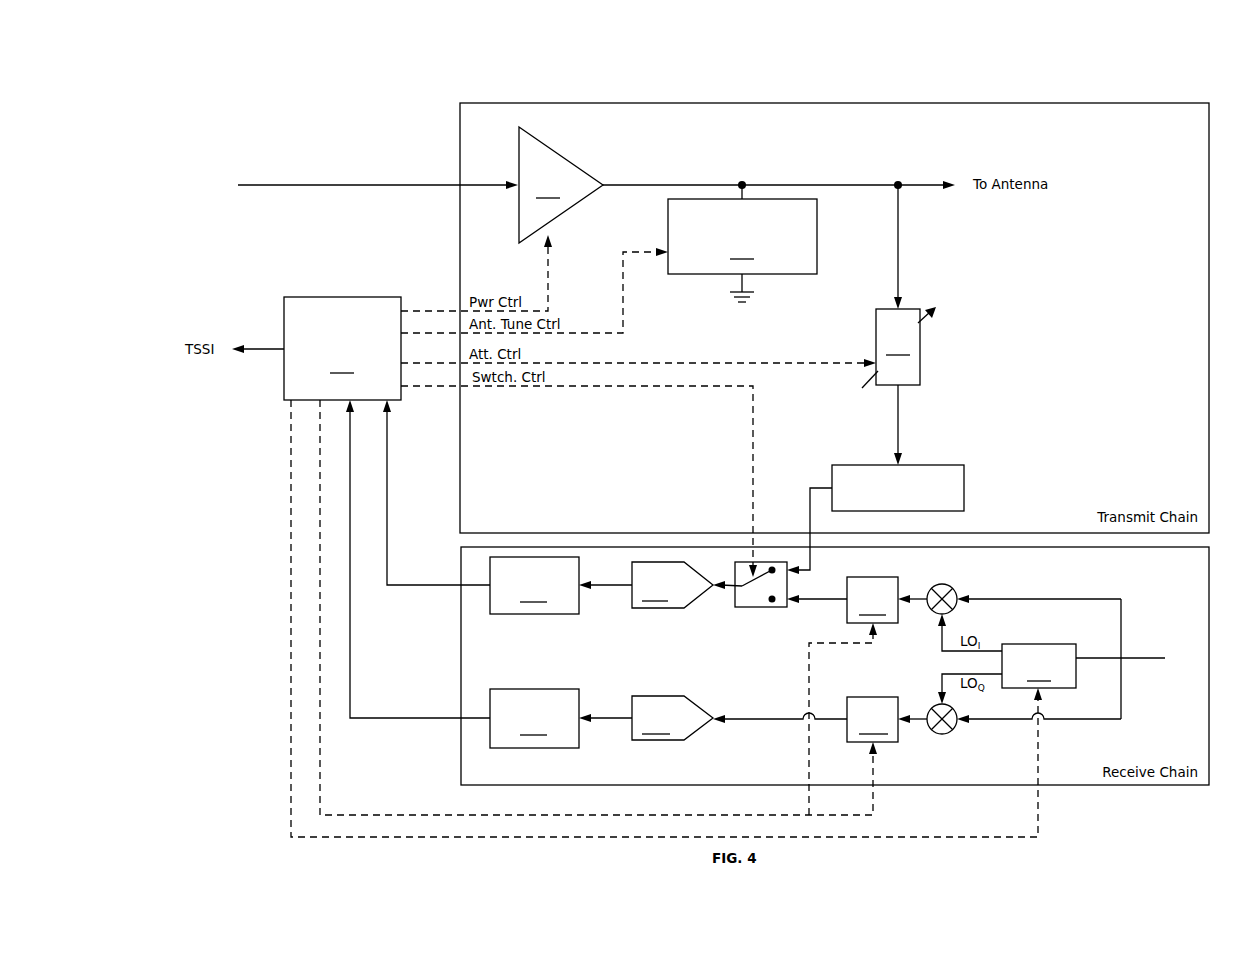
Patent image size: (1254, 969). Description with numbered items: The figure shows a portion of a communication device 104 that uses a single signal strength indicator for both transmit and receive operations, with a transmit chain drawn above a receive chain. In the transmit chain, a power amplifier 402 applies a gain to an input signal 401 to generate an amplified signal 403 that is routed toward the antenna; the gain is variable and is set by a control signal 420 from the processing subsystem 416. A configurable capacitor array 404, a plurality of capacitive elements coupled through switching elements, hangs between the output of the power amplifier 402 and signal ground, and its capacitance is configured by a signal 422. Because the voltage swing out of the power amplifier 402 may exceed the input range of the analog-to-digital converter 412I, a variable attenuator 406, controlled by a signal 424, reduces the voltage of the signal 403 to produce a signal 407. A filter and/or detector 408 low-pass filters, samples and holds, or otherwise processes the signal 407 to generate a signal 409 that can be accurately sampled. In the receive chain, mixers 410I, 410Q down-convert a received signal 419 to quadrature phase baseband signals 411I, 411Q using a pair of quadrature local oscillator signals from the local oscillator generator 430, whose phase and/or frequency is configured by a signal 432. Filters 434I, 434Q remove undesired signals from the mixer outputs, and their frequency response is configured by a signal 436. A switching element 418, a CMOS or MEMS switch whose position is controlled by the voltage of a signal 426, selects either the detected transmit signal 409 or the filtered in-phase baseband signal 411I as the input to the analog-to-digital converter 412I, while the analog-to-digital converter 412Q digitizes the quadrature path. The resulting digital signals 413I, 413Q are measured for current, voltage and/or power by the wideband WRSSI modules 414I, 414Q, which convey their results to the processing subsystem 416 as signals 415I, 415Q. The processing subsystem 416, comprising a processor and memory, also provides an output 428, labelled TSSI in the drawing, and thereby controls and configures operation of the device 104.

The communication device 104 is at (260, 122).
The signal 401 is at (405, 187).
The power amplifier 402 is at (561, 185).
The signal 403 is at (639, 182).
The configurable capacitor array 404 is at (742, 243).
The variable attenuator 406 is at (899, 286).
The signal 407 is at (899, 413).
The filter and/or detector 408 is at (898, 488).
The signal 409 is at (809, 506).
The mixer 410I is at (957, 592).
The mixer 410Q is at (956, 728).
The quadrature phase baseband signal 411I is at (820, 597).
The quadrature phase baseband signal 411Q is at (770, 712).
The analog-to-digital converter 412I is at (672, 585).
The analog-to-digital converter 412Q is at (672, 718).
The signal 413I is at (612, 577).
The signal 413Q is at (612, 710).
The WRSSI module 414I is at (534, 585).
The WRSSI module 414Q is at (534, 718).
The signal 415I is at (430, 586).
The signal 415Q is at (430, 718).
The processing subsystem 416 is at (342, 348).
The switching element 418 is at (739, 606).
The received signal 419 is at (1136, 658).
The control signal 420 is at (549, 300).
The signal 422 is at (624, 309).
The signal 424 is at (734, 362).
The signal 426 is at (753, 407).
The TSSI output 428 is at (270, 347).
The local oscillator generator 430 is at (1039, 666).
The signal 432 is at (290, 445).
The filter 434I is at (872, 600).
The filter 434Q is at (872, 719).
The signal 436 is at (360, 806).